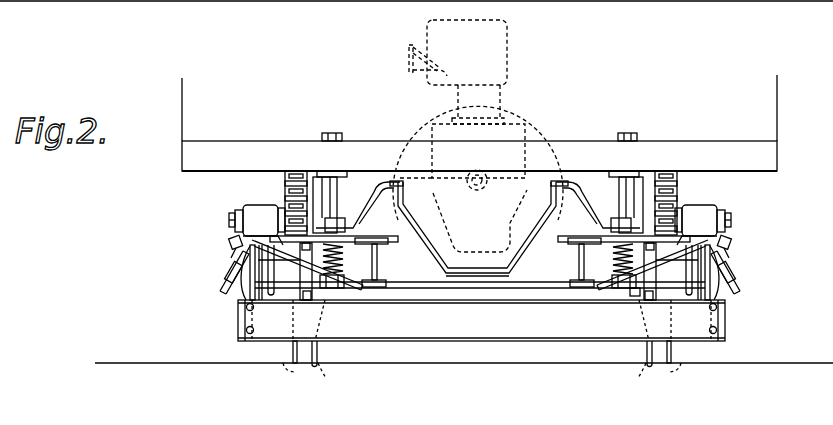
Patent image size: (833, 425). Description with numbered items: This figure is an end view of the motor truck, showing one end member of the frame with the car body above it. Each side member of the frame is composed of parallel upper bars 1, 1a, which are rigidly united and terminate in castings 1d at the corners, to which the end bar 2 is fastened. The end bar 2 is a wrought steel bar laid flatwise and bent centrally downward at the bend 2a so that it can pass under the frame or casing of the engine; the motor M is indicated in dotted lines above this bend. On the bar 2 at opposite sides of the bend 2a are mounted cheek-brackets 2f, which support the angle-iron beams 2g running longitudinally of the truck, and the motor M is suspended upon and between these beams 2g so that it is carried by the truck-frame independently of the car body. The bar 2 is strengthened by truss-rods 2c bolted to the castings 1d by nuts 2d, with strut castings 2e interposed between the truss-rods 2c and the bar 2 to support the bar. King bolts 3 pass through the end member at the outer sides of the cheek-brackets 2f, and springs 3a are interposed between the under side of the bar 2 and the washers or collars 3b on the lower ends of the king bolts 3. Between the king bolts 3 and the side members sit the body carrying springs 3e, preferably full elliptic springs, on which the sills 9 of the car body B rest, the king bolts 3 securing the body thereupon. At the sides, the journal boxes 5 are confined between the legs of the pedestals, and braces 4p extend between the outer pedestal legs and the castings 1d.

The sill 9 is at (215, 157).
The car body B is at (778, 102).
The motor M is at (511, 137).
The body carrying spring 3e is at (697, 135).
The king bolt 3 is at (336, 195).
The end bar 2 is at (423, 240).
The bend 2a is at (490, 274).
The cheek-bracket 2f is at (575, 207).
The angle-iron beam 2g is at (407, 193).
The strut casting 2e is at (381, 284).
The truss-rod 2c is at (530, 286).
The spring 3a is at (633, 262).
The washer or collar 3b is at (636, 296).
The upper bar 1 is at (237, 216).
The upper bar 1a is at (686, 212).
The casting 1d is at (737, 203).
The nut 2d is at (750, 248).
The journal box 5 is at (233, 288).
The brace 4p is at (756, 306).